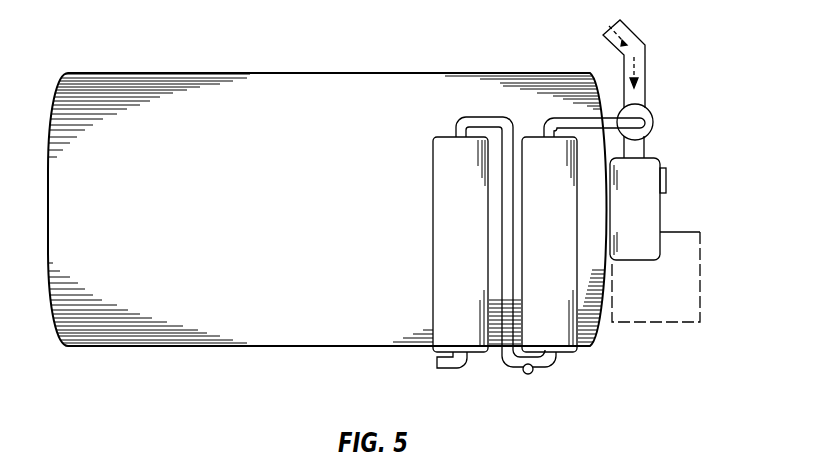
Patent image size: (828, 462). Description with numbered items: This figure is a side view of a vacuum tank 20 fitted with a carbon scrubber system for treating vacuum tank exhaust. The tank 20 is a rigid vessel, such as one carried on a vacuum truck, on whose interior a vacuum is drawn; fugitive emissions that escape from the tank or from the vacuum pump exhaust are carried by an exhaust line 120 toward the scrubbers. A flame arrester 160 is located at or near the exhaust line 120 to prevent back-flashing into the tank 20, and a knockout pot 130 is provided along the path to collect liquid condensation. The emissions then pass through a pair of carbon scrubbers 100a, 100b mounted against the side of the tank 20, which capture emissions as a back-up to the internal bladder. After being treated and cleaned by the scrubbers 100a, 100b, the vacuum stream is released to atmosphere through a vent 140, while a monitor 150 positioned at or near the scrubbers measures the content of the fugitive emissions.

The vacuum tank 20 is at (337, 73).
The carbon scrubber 100a is at (574, 254).
The carbon scrubber 100b is at (485, 254).
The exhaust line 120 is at (645, 63).
The knockout pot 130 is at (660, 218).
The vent 140 is at (445, 370).
The monitor 150 is at (529, 374).
The flame arrester 160 is at (653, 117).